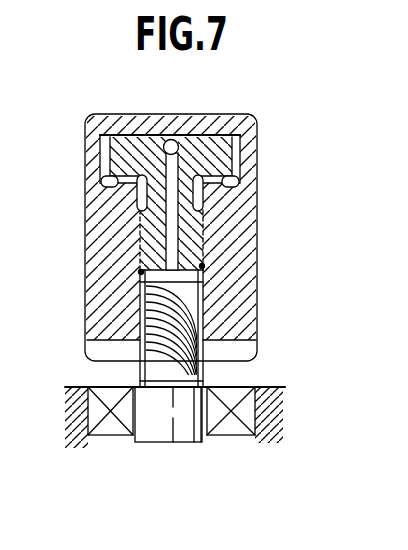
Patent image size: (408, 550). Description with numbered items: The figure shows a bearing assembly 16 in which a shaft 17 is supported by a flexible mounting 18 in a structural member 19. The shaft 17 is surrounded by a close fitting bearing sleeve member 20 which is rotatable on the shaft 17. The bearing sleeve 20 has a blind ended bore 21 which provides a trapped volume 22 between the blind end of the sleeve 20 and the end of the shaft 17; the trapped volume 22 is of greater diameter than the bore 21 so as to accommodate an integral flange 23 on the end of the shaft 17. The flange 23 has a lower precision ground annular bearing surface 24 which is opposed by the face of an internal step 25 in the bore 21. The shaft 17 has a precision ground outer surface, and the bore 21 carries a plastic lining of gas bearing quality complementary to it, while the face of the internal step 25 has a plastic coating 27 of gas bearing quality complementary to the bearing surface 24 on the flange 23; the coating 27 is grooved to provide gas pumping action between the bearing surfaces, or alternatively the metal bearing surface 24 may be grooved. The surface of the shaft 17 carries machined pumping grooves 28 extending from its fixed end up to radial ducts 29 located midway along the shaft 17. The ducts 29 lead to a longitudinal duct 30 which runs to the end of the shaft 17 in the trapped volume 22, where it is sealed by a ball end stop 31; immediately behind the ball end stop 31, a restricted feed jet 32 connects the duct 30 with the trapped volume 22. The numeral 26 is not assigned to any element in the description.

The bearing assembly 16 is at (258, 165).
The shaft 17 is at (143, 371).
The flexible mounting 18 is at (117, 425).
The structural member 19 is at (72, 406).
The bearing sleeve member 20 is at (257, 302).
The blind ended bore 21 is at (215, 338).
The trapped volume 22 is at (232, 146).
The integral flange 23 is at (100, 152).
The annular bearing surface 24 is at (101, 183).
The internal step 25 is at (114, 190).
The piston 26 is at (256, 240).
The plastic coating 27 is at (222, 197).
The pumping grooves 28 is at (203, 368).
The radial ducts 29 is at (140, 273).
The longitudinal duct 30 is at (173, 243).
The ball end stop 31 is at (175, 139).
The restricted feed jet 32 is at (206, 134).